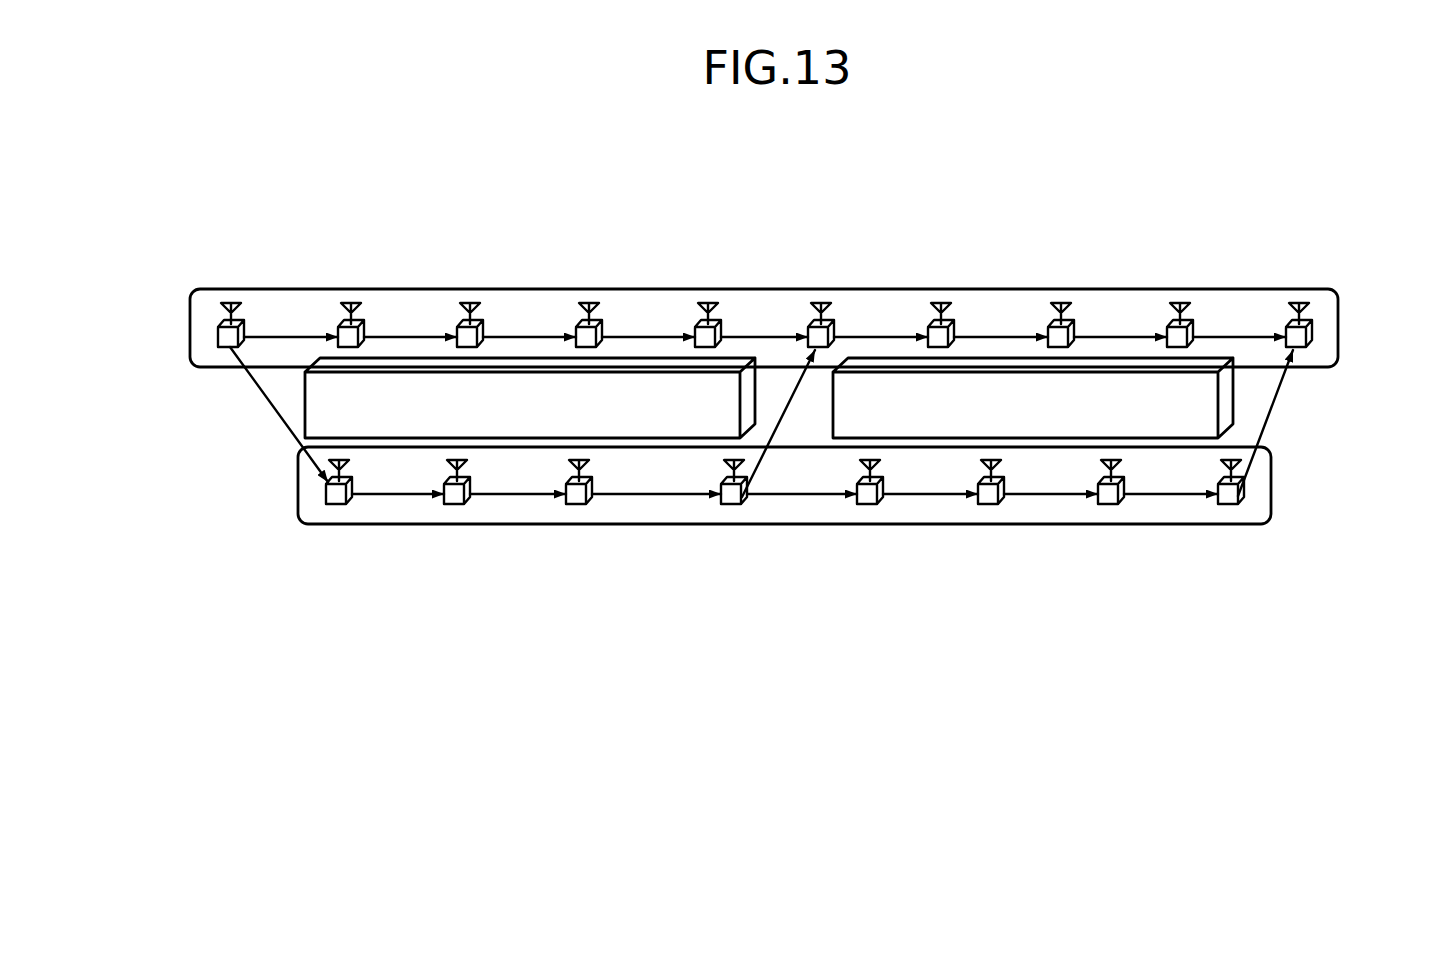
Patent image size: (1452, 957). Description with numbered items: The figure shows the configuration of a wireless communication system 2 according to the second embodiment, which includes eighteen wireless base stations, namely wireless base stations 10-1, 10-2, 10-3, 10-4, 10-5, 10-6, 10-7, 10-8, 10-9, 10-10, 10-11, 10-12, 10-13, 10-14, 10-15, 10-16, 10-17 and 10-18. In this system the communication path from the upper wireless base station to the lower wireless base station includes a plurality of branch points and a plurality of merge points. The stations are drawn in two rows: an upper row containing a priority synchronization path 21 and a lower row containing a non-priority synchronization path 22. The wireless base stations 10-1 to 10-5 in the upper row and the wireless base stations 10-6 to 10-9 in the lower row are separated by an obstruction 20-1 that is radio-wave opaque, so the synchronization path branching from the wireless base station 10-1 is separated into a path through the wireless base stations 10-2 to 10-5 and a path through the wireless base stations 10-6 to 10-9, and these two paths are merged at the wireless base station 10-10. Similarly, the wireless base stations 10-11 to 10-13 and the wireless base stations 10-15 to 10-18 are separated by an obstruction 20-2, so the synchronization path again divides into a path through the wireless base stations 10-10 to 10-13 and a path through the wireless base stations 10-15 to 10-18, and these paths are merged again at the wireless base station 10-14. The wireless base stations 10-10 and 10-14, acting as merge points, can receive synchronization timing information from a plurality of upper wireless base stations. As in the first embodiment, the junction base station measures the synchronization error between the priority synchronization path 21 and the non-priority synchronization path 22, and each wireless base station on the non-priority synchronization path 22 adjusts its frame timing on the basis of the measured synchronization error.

The wireless communication system 2 is at (1033, 172).
The priority synchronization path 21 is at (1338, 328).
The non-priority synchronization path 22 is at (1271, 485).
The obstruction 20-1 is at (305, 410).
The obstruction 20-2 is at (1233, 408).
The wireless base station 10-1 is at (231, 302).
The wireless base station 10-2 is at (351, 302).
The wireless base station 10-3 is at (470, 302).
The wireless base station 10-4 is at (589, 302).
The wireless base station 10-5 is at (708, 302).
The wireless base station 10-6 is at (336, 504).
The wireless base station 10-7 is at (454, 504).
The wireless base station 10-8 is at (576, 504).
The wireless base station 10-9 is at (731, 504).
The wireless base station 10-10 is at (821, 302).
The wireless base station 10-11 is at (941, 302).
The wireless base station 10-12 is at (1061, 302).
The wireless base station 10-13 is at (1180, 302).
The wireless base station 10-14 is at (1299, 302).
The wireless base station 10-15 is at (867, 504).
The wireless base station 10-16 is at (988, 504).
The wireless base station 10-17 is at (1108, 504).
The wireless base station 10-18 is at (1228, 504).